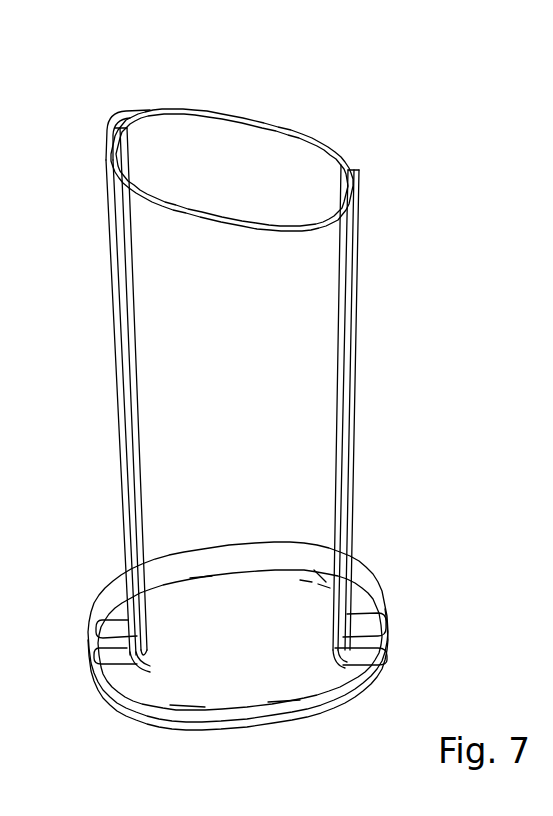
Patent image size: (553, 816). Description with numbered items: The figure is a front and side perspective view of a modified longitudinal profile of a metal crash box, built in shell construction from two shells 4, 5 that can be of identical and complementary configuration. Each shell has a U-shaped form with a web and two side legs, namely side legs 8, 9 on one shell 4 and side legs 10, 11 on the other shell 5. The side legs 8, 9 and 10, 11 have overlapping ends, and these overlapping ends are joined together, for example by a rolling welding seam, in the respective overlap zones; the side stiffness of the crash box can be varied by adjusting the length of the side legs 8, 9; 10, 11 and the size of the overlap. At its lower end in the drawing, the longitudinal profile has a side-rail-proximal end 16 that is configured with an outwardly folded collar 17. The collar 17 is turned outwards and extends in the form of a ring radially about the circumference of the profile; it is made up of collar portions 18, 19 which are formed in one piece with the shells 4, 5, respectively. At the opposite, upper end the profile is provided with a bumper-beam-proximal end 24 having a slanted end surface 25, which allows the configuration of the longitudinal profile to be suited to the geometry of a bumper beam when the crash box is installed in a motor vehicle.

The shell 4 is at (292, 119).
The shell 5 is at (170, 233).
The side leg 8 is at (105, 143).
The side leg 9 is at (349, 172).
The side leg 10 is at (128, 137).
The side leg 11 is at (360, 193).
The side-rail-proximal end 16 is at (396, 553).
The collar 17 is at (95, 688).
The collar portion 18 is at (114, 586).
The collar portion 19 is at (347, 690).
The bumper-beam-proximal end 24 is at (368, 116).
The slanted end surface 25 is at (253, 117).